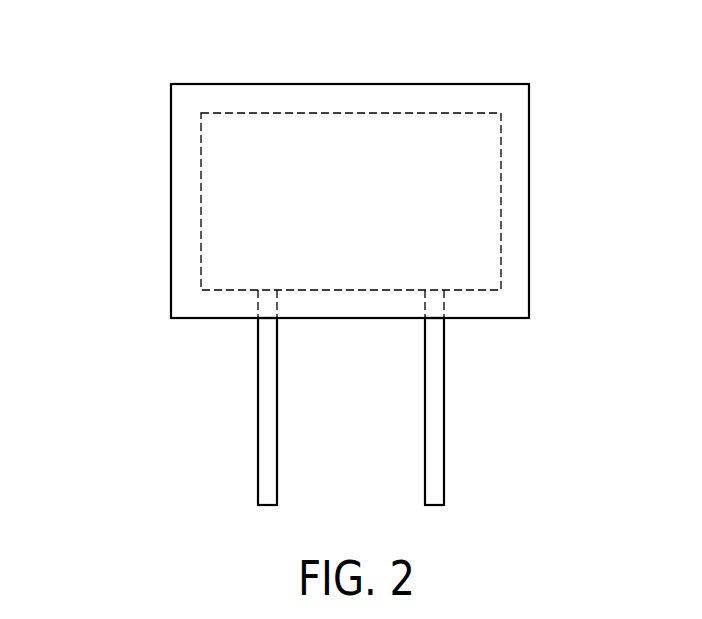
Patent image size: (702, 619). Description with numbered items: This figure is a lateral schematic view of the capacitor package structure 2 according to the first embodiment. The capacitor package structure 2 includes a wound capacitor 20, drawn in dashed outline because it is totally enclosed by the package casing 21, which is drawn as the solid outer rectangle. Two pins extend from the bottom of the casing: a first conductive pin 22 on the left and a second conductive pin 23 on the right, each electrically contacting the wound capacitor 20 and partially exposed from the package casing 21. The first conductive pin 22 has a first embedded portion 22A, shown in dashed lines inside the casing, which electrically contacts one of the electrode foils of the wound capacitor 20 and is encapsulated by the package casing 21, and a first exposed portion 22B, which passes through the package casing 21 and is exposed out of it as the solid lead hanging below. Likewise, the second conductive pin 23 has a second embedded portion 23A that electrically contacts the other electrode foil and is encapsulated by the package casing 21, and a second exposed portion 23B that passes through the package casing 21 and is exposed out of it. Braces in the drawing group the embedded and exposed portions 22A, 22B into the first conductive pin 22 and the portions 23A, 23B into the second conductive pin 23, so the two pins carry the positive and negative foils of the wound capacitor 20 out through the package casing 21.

The capacitor package structure 2 is at (134, 40).
The wound capacitor 20 is at (497, 240).
The package casing 21 is at (527, 130).
The first conductive pin 22 is at (171, 397).
The first embedded portion 22A is at (268, 298).
The first exposed portion 22B is at (268, 425).
The second conductive pin 23 is at (532, 397).
The second embedded portion 23A is at (433, 298).
The second exposed portion 23B is at (433, 425).